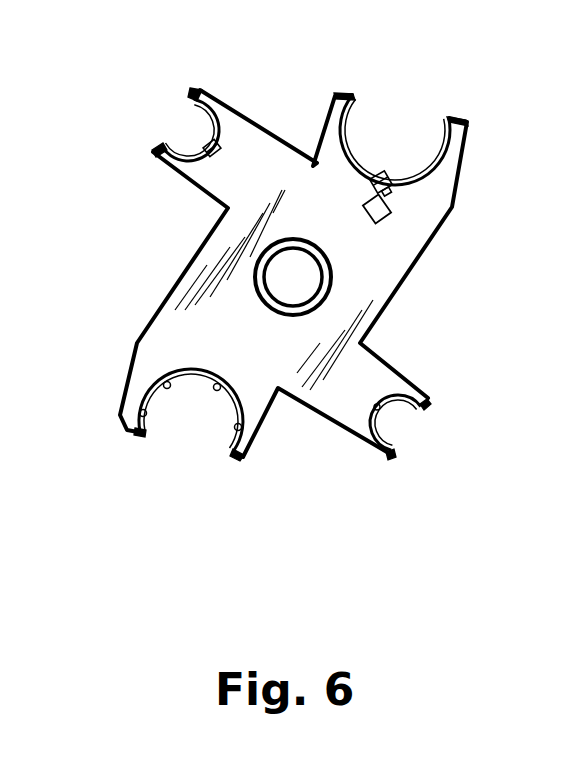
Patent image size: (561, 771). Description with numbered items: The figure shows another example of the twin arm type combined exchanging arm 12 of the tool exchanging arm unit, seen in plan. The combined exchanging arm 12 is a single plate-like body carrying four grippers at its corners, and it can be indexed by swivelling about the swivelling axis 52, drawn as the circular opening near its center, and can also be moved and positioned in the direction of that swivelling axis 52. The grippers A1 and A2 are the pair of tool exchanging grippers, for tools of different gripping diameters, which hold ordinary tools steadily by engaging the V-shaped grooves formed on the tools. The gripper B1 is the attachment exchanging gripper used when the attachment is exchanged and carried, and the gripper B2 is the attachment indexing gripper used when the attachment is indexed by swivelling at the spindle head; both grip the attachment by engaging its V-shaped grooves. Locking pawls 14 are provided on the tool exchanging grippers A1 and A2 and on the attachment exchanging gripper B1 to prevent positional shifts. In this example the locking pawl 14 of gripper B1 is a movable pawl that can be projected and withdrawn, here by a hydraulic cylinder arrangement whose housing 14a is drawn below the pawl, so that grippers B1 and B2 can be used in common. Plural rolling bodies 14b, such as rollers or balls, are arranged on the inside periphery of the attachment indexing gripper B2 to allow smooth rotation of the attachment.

The combined exchanging arm 12 is at (395, 250).
The locking pawl 14 is at (228, 140).
The pin head 14a is at (386, 217).
The rolling bodies 14b is at (168, 387).
The swivelling axis 52 is at (325, 302).
The tool exchanging gripper A1 is at (207, 100).
The tool exchanging gripper A2 is at (380, 455).
The attachment exchanging gripper B1 is at (353, 96).
The attachment indexing gripper B2 is at (140, 434).